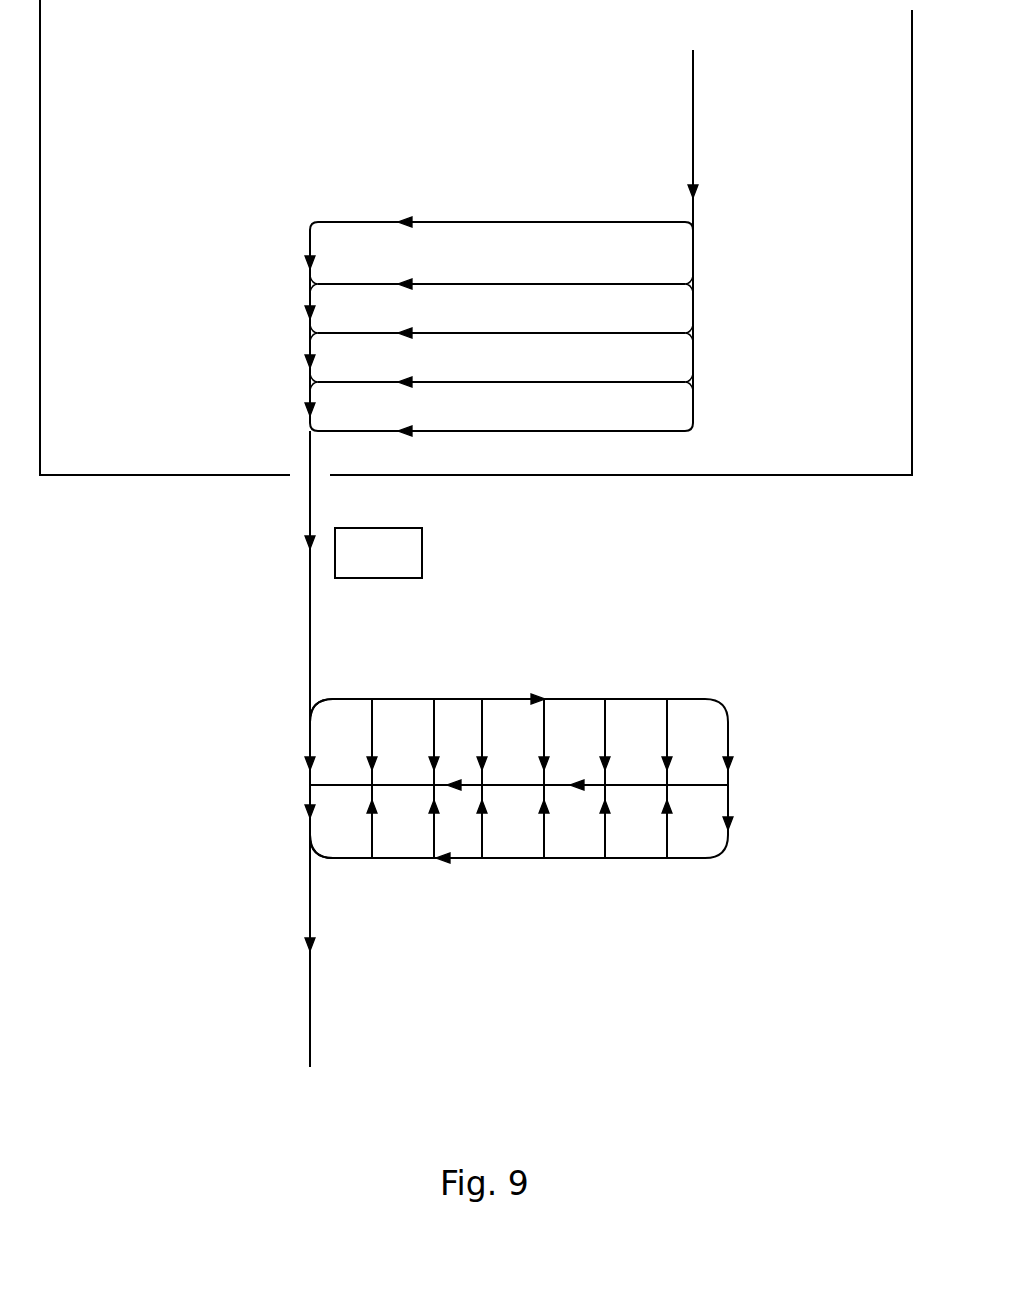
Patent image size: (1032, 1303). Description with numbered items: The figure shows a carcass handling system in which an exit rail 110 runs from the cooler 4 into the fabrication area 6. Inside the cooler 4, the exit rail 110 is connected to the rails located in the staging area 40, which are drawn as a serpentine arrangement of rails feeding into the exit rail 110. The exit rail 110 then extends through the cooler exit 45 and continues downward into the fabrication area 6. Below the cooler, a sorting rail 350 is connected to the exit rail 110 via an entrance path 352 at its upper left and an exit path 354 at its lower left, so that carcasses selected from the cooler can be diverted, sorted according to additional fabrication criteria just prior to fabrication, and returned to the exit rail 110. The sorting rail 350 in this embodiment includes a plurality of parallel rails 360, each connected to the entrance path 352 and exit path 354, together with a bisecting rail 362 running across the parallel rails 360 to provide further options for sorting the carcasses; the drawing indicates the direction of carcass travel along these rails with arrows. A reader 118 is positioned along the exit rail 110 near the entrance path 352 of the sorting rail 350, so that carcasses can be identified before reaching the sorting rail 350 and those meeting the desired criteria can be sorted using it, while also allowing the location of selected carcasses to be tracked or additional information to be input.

The cooler 4 is at (850, 343).
The fabrication area 6 is at (88, 676).
The staging area 40 is at (270, 206).
The cooler exit 45 is at (268, 431).
The exit rail 110 is at (308, 662).
The reader 118 is at (422, 540).
The sorting rail 350 is at (586, 822).
The entrance path 352 is at (335, 699).
The exit path 354 is at (334, 858).
The parallel rails 360 is at (667, 722).
The bisecting rail 362 is at (592, 783).